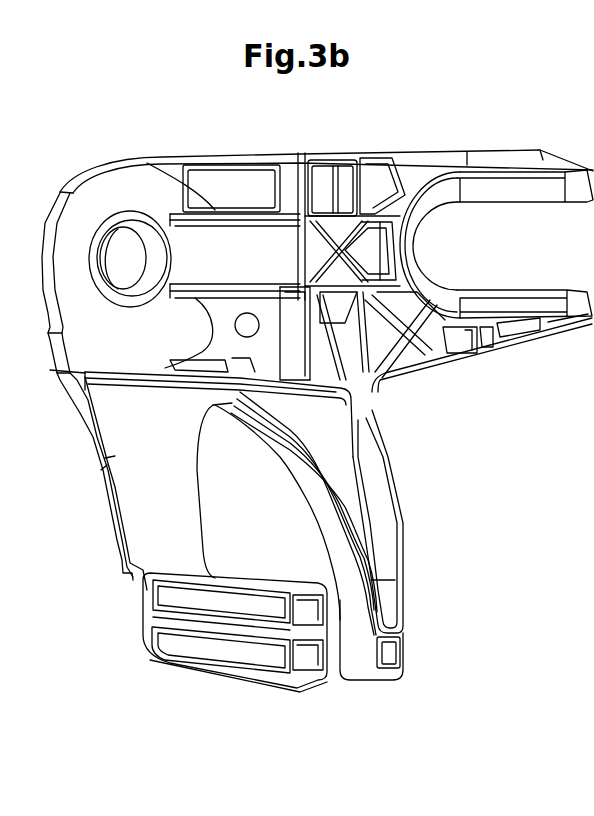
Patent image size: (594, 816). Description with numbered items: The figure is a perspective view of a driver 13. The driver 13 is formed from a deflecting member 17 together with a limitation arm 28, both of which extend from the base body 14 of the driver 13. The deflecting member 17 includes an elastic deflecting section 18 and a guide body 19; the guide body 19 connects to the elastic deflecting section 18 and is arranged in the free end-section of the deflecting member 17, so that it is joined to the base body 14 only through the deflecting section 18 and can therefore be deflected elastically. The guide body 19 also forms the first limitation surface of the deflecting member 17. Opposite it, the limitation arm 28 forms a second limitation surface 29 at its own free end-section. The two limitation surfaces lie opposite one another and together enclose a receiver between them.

The driver 13 is at (190, 152).
The base body 14 is at (243, 183).
The deflecting member 17 is at (107, 465).
The elastic deflecting section 18 is at (132, 497).
The guide body 19 is at (228, 652).
The limitation arm 28 is at (347, 455).
The second limitation surface 29 is at (358, 658).